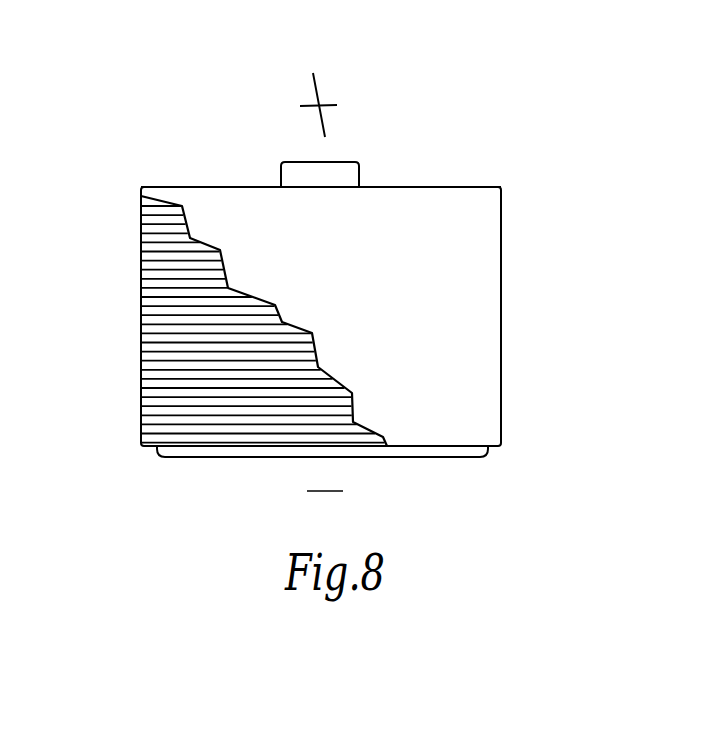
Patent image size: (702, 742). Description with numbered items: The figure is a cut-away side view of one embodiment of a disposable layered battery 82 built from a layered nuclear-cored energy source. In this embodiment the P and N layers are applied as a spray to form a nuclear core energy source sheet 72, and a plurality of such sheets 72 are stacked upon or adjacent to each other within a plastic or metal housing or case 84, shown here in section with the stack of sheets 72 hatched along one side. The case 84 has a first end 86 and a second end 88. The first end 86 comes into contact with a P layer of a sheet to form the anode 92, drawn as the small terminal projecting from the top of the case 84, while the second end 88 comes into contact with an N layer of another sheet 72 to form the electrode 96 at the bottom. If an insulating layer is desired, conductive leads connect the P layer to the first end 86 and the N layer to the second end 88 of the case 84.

The nuclear core energy source sheet 72 is at (146, 264).
The layered battery 82 is at (118, 132).
The housing or case 84 is at (487, 263).
The first end of the case 86 is at (473, 187).
The second end of the case 88 is at (493, 448).
The anode 92 is at (284, 162).
The electrode 96 is at (198, 457).